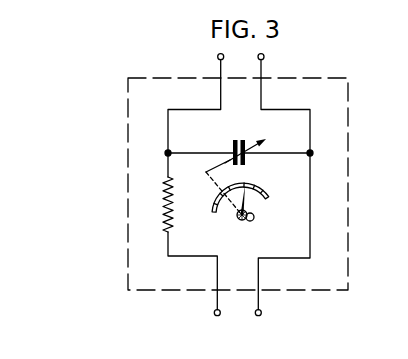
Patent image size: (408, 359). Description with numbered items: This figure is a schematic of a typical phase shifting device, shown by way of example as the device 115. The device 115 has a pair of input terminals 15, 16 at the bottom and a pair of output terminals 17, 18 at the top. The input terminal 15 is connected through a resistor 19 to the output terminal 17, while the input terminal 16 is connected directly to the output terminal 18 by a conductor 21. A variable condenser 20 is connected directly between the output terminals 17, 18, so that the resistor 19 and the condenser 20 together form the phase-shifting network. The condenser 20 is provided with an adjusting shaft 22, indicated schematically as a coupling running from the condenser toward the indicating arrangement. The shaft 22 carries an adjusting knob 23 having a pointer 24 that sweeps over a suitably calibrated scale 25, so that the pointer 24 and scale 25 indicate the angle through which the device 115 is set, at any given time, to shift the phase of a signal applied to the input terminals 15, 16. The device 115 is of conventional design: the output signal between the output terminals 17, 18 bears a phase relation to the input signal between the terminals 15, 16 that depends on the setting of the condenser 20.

The phase shifting device 115 is at (102, 194).
The input terminal 15 is at (214, 313).
The input terminal 16 is at (261, 314).
The output terminal 17 is at (218, 55).
The output terminal 18 is at (264, 55).
The resistor 19 is at (163, 193).
The variable condenser 20 is at (237, 138).
The conductor 21 is at (312, 193).
The adjusting shaft 22 is at (211, 181).
The adjusting knob 23 is at (254, 220).
The pointer 24 is at (247, 196).
The calibrated scale 25 is at (258, 186).